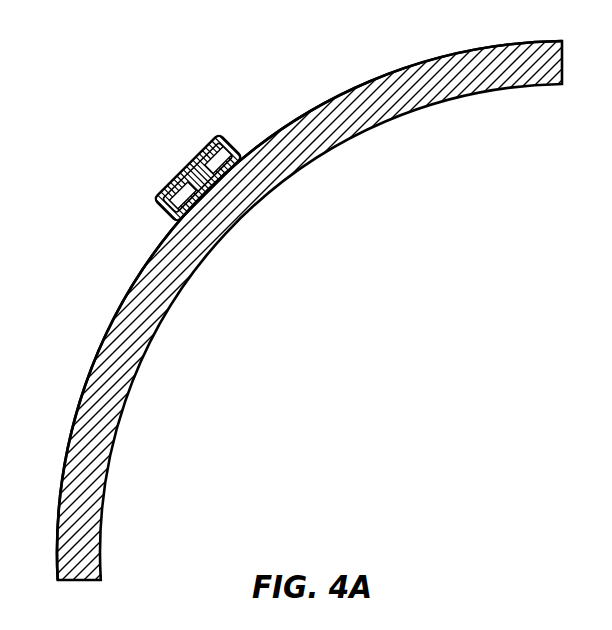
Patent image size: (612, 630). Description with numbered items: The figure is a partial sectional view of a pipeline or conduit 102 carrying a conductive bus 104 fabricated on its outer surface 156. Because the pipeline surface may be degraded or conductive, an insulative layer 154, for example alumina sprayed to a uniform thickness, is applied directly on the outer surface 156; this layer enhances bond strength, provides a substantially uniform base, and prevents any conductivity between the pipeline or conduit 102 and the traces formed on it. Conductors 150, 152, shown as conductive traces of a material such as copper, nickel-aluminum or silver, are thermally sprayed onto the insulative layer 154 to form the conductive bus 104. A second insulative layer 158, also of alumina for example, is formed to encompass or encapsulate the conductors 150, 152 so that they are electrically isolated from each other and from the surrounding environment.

The pipeline or conduit 102 is at (371, 96).
The conductive bus 104 is at (172, 145).
The conductor 150 is at (203, 144).
The conductor 152 is at (157, 196).
The insulative layer 154 is at (236, 150).
The outer surface 156 is at (141, 268).
The second insulative layer 158 is at (182, 161).